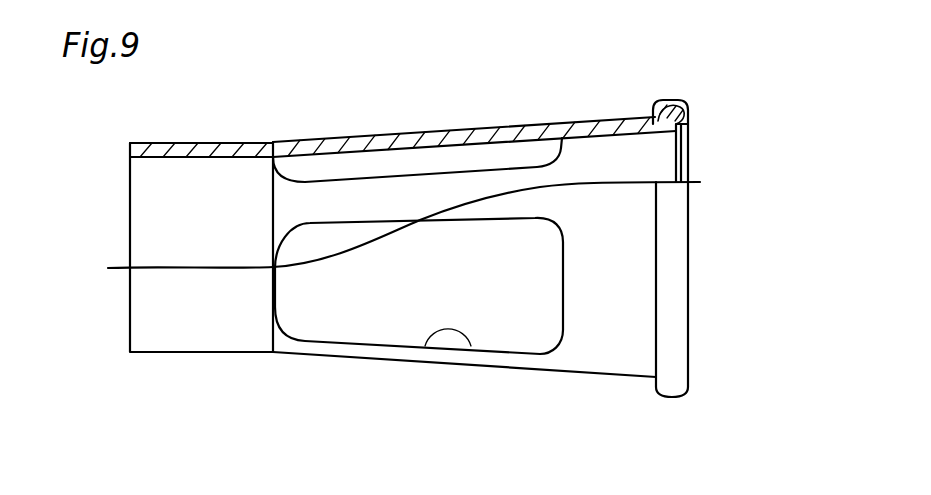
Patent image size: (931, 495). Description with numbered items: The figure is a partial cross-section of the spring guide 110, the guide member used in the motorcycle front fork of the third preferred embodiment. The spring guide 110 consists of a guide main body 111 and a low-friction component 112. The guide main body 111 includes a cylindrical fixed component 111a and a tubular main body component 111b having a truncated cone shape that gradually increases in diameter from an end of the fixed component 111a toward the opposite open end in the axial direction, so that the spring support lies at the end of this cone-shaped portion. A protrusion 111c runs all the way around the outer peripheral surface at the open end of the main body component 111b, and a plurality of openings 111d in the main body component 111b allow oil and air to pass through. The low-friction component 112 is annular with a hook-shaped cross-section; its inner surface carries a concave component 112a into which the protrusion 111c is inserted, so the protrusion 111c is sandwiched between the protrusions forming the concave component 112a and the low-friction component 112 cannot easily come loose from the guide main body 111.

The spring guide 110 is at (740, 70).
The guide main body 111 is at (403, 98).
The fixed component 111a is at (202, 152).
The main body component 111b is at (399, 128).
The protrusion 111c is at (690, 113).
The openings 111d is at (471, 346).
The low-friction component 112 is at (615, 102).
The concave component 112a is at (643, 118).